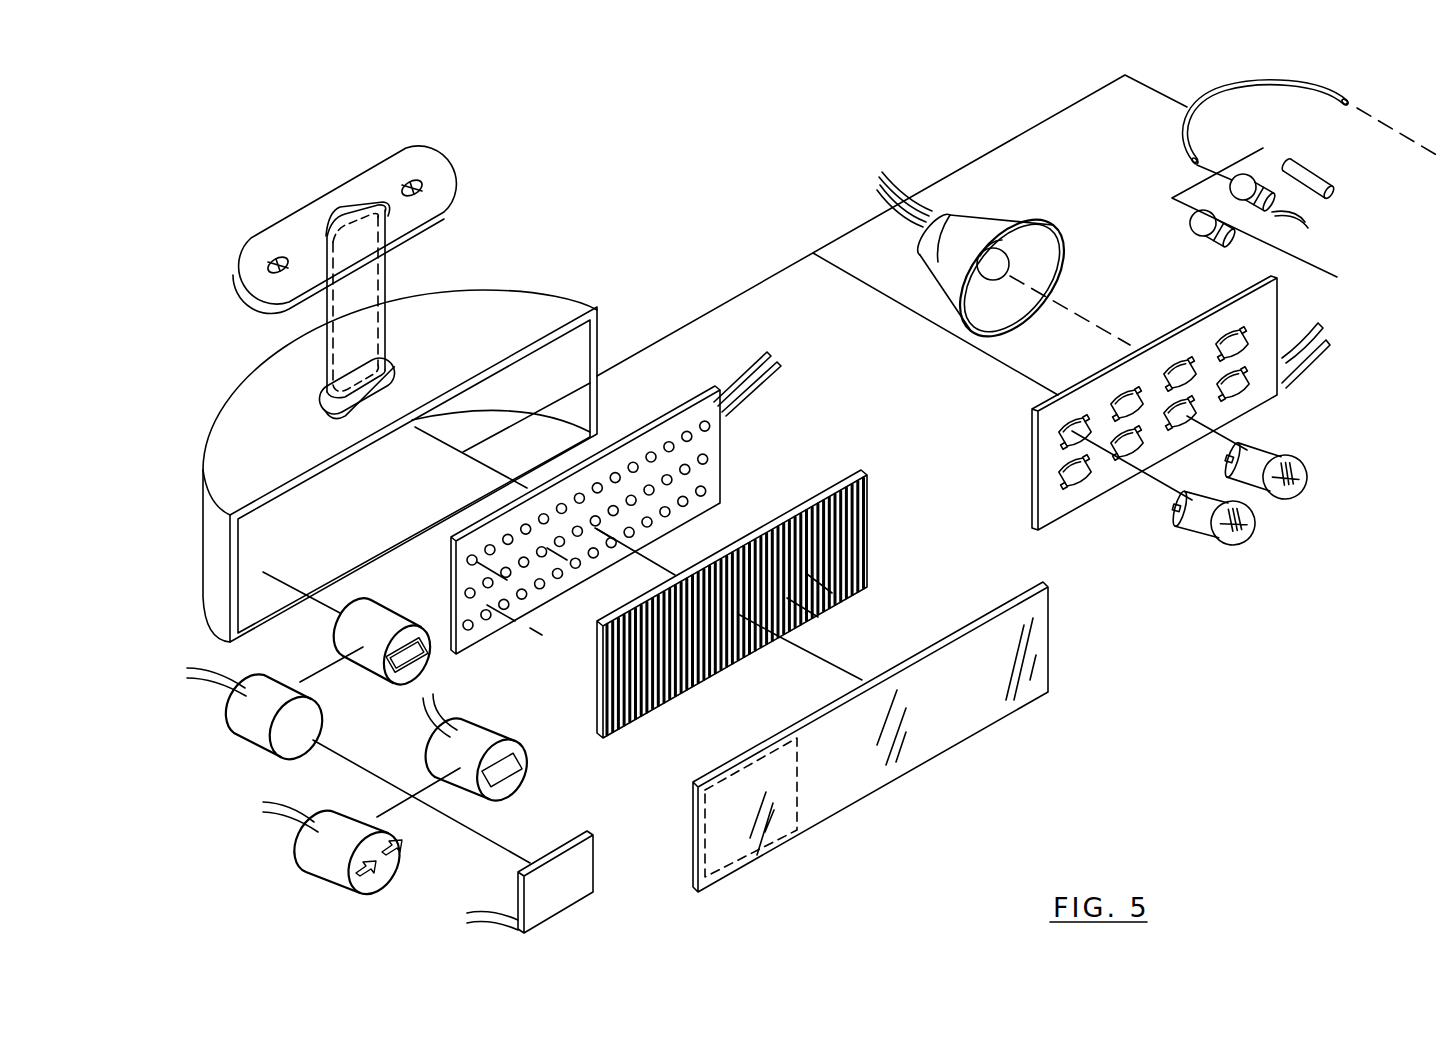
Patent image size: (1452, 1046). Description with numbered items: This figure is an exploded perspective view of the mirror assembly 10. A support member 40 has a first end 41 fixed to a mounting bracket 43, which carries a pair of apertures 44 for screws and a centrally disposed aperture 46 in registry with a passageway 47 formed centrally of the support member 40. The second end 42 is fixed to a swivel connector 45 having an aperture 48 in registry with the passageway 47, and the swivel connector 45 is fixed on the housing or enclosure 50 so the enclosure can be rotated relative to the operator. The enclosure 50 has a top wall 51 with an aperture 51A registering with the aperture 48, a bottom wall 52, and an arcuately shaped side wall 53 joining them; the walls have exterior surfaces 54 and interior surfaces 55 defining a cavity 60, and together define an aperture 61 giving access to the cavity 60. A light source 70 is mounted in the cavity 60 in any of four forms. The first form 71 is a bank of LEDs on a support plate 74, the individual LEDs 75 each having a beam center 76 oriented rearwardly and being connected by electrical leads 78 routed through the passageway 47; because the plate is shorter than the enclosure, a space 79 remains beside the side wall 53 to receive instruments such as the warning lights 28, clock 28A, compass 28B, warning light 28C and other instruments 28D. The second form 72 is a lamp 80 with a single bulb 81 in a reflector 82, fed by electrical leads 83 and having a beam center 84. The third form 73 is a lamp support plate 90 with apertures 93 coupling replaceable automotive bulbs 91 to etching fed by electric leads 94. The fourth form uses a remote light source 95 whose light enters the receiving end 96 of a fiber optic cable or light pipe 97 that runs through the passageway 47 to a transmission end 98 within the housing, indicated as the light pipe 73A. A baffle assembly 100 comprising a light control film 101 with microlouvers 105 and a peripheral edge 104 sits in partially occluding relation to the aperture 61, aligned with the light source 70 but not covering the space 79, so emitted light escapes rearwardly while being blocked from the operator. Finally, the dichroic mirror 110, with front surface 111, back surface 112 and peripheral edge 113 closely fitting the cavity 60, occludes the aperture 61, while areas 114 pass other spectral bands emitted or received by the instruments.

The mirror assembly 10 is at (510, 248).
The warning lights 28 is at (385, 871).
The clock 28A is at (415, 670).
The compass 28B is at (508, 782).
The warning lights 28C is at (287, 760).
The other instruments 28D is at (598, 860).
The support member 40 is at (335, 338).
The first end 41 is at (384, 244).
The second end 42 is at (323, 378).
The mounting bracket 43 is at (303, 227).
The apertures 44 is at (416, 182).
The swivel connector 45 is at (397, 368).
The centrally disposed aperture 46 is at (362, 205).
The passageway 47 is at (363, 293).
The aperture 48 is at (321, 405).
The housing or enclosure 50 is at (240, 448).
The top wall 51 is at (531, 326).
The aperture 51A is at (357, 363).
The bottom wall 52 is at (257, 545).
The side wall 53 is at (215, 548).
The exterior surfaces 54 is at (212, 438).
The interior surfaces 55 is at (507, 448).
The cavity 60 is at (418, 510).
The aperture 61 is at (592, 338).
The light source 70 is at (766, 445).
The first form of the light source 71 is at (702, 465).
The second form of the light source 72 is at (1000, 207).
The third form of the light source 73 is at (1262, 414).
The optical fiber or light pipe 73A is at (1314, 116).
The support plate 74 is at (688, 414).
The circuit board holes 75 is at (600, 517).
The beam center 76 is at (597, 578).
The electrical leads 78 is at (747, 360).
The space 79 is at (214, 605).
The lamp 80 is at (950, 263).
The bulb or lamp 81 is at (1002, 260).
The reflector 82 is at (1060, 228).
The electrical leads 83 is at (903, 177).
The beam center 84 is at (1083, 313).
The lamp support plate 90 is at (1270, 300).
The automotive bulbs or lamps 91 is at (1306, 480).
The apertures 93 is at (1217, 338).
The electric leads 94 is at (1330, 348).
The light source or discharge tube 95 is at (1310, 186).
The receiving end 96 is at (1188, 152).
The fiber optic cable or light pipe 97 is at (1222, 98).
The transmission end 98 is at (1348, 95).
The baffle assembly 100 is at (656, 716).
The light control film 101 is at (657, 667).
The peripheral edge 104 is at (818, 492).
The microlouvers 105 is at (832, 594).
The dichroic mirror 110 is at (1052, 650).
The front surface 111 is at (927, 742).
The back surface 112 is at (935, 642).
The peripheral edge 113 is at (722, 860).
The areas 114 is at (755, 832).